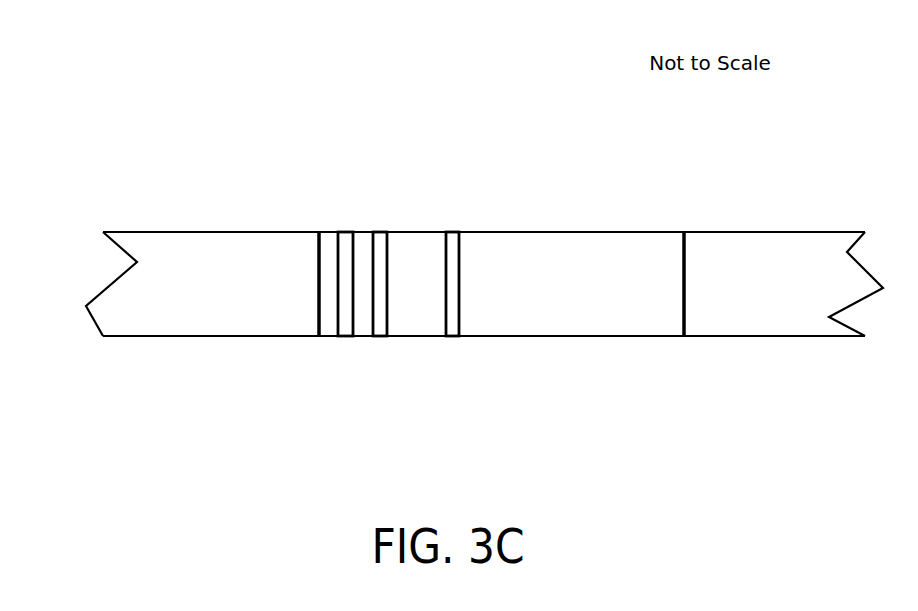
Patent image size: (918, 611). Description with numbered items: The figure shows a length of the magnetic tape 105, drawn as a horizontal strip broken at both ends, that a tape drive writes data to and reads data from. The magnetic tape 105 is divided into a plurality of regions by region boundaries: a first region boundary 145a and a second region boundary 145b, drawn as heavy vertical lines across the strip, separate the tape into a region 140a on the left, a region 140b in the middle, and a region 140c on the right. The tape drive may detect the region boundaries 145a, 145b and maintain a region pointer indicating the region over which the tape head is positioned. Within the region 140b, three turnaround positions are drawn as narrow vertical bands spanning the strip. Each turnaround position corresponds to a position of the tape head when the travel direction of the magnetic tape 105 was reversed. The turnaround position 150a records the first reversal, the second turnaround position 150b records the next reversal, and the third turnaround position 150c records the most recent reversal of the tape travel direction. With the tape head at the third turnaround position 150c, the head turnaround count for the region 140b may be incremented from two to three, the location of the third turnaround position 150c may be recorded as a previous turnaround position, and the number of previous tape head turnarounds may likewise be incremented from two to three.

The magnetic tape 105 is at (138, 232).
The region 140a is at (241, 250).
The region 140b is at (658, 255).
The region 140c is at (813, 255).
The region boundary 145a is at (319, 338).
The region boundary 145b is at (684, 338).
The turnaround position 150a is at (346, 232).
The second turnaround position 150b is at (380, 341).
The third turnaround position 150c is at (451, 232).